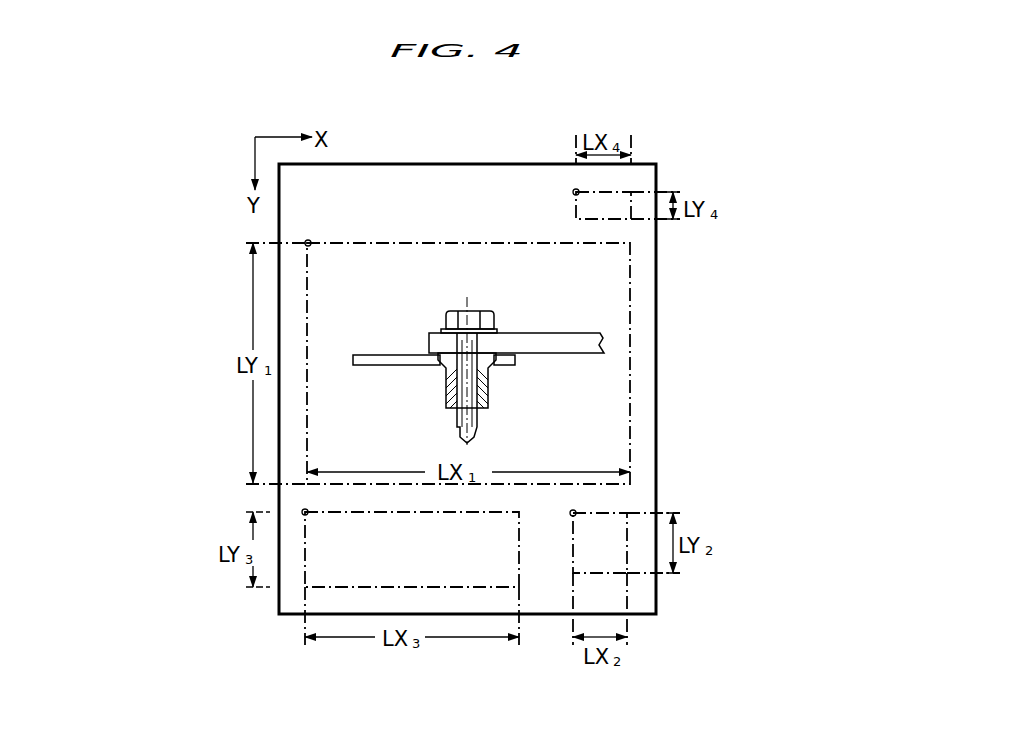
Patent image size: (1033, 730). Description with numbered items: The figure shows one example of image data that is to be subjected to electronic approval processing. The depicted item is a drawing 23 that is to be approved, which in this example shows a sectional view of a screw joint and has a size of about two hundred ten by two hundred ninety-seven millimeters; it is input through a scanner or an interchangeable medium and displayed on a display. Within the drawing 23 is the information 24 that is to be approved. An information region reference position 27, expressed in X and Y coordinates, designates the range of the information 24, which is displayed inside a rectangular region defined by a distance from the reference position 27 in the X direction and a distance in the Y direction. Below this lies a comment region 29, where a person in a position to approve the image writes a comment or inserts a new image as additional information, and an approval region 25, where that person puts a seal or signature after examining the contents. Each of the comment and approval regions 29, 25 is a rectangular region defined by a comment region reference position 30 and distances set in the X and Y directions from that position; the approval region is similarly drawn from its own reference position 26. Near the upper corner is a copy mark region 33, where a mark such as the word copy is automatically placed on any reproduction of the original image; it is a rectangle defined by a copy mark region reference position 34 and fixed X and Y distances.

The drawing 23 is at (656, 273).
The information 24 is at (656, 360).
The approval region 25 is at (573, 530).
The approval region reference position 26 is at (575, 511).
The information region reference position 27 is at (306, 242).
The comment region 29 is at (506, 512).
The comment region reference position 30 is at (303, 510).
The copy mark region 33 is at (576, 211).
The copy mark region reference position 34 is at (574, 190).